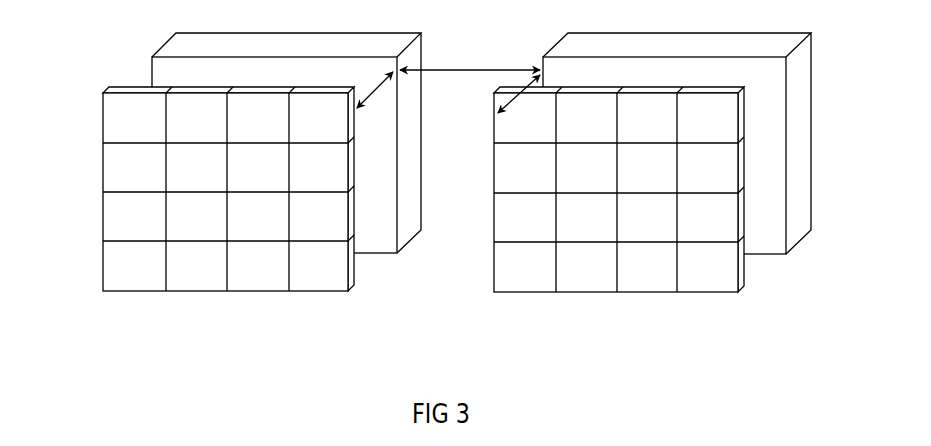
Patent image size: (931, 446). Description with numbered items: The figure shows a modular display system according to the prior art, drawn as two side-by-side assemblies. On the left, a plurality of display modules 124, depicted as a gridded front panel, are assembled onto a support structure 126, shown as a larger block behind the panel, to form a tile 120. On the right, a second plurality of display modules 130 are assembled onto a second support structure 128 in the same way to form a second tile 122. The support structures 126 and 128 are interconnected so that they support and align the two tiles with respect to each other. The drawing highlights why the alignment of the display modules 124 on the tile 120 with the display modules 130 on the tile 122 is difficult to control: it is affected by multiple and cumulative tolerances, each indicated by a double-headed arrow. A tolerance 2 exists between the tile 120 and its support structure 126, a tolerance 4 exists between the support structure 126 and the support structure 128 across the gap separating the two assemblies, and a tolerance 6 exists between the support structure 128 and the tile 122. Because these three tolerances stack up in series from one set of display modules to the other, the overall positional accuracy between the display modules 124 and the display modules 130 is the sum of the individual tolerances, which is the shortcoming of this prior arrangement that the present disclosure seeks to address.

The tile 120 is at (231, 188).
The second tile 122 is at (649, 187).
The display modules 124 is at (138, 215).
The support structure 126 is at (182, 43).
The support structure 128 is at (767, 55).
The display modules 130 is at (723, 283).
The tolerance 2 is at (375, 95).
The tolerance 4 is at (470, 60).
The tolerance 6 is at (519, 97).